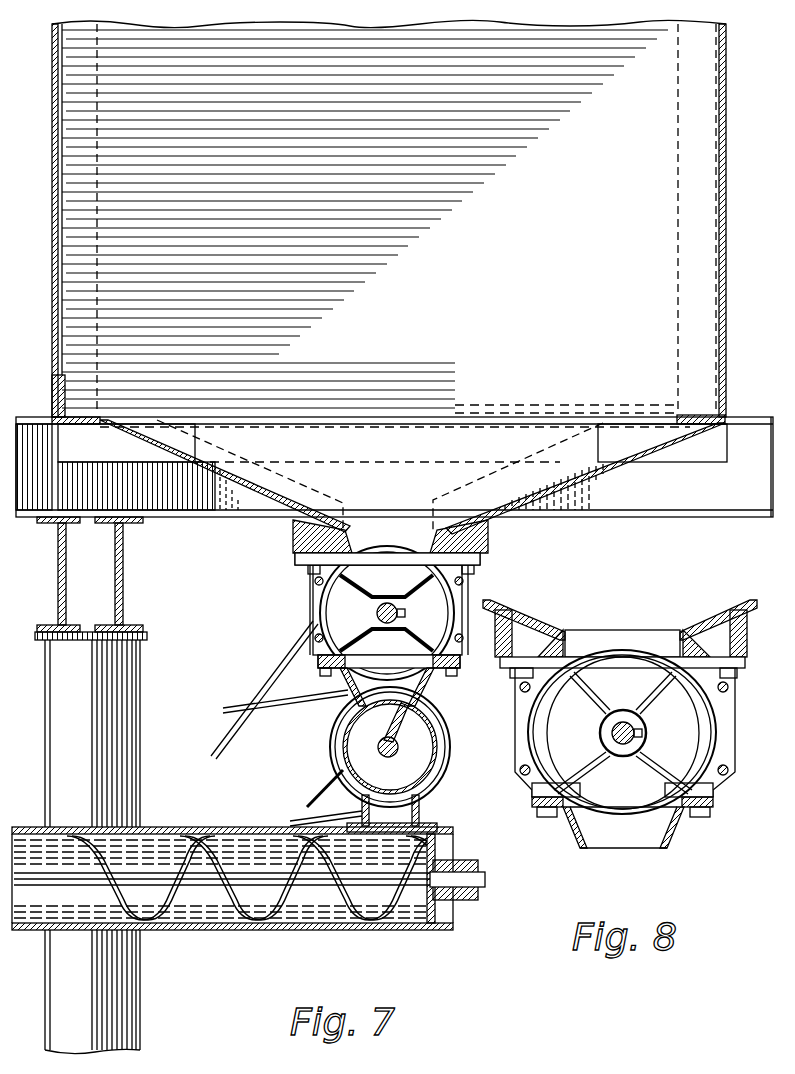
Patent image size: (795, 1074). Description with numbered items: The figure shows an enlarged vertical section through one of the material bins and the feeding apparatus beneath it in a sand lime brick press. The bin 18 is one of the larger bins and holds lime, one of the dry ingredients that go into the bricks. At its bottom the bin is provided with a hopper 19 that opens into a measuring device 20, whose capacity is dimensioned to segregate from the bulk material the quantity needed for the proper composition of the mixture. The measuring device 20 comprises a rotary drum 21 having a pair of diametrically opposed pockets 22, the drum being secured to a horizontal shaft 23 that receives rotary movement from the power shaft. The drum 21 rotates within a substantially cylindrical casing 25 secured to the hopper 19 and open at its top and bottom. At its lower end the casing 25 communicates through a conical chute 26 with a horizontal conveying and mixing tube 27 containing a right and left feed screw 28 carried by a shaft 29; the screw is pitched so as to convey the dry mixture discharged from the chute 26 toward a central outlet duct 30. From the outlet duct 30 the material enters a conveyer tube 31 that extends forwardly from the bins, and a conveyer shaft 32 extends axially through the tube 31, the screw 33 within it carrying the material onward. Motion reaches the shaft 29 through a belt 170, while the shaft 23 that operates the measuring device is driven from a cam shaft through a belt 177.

In FIG. 7, the bin 18 is at (389, 241).
In FIG. 7, the hopper 19 is at (247, 482).
In FIG. 7, the measuring device 20 is at (318, 598).
In FIG. 8, the measuring device 20 is at (515, 713).
In FIG. 7, the rotary drum 21 is at (325, 612).
In FIG. 8, the rotary drum 21 is at (705, 738).
In FIG. 7, the pockets 22 is at (386, 613).
In FIG. 8, the pockets 22 is at (613, 650).
In FIG. 7, the horizontal shaft 23 is at (378, 613).
In FIG. 8, the horizontal shaft 23 is at (610, 733).
In FIG. 7, the cylindrical casing 25 is at (310, 630).
In FIG. 8, the cylindrical casing 25 is at (712, 755).
In FIG. 7, the conical chute 26 is at (387, 687).
In FIG. 8, the conical chute 26 is at (680, 835).
In FIG. 7, the conveying and mixing tube 27 is at (335, 747).
In FIG. 7, the feed screw 28 is at (398, 728).
In FIG. 7, the shaft 29 is at (390, 757).
In FIG. 7, the central outlet duct 30 is at (407, 813).
In FIG. 7, the conveyer tube 31 is at (167, 827).
In FIG. 7, the conveyer shaft 32 is at (490, 878).
In FIG. 7, the conveyor screw 33 is at (278, 898).
In FIG. 7, the belt 170 is at (285, 711).
In FIG. 7, the belt 177 is at (268, 678).